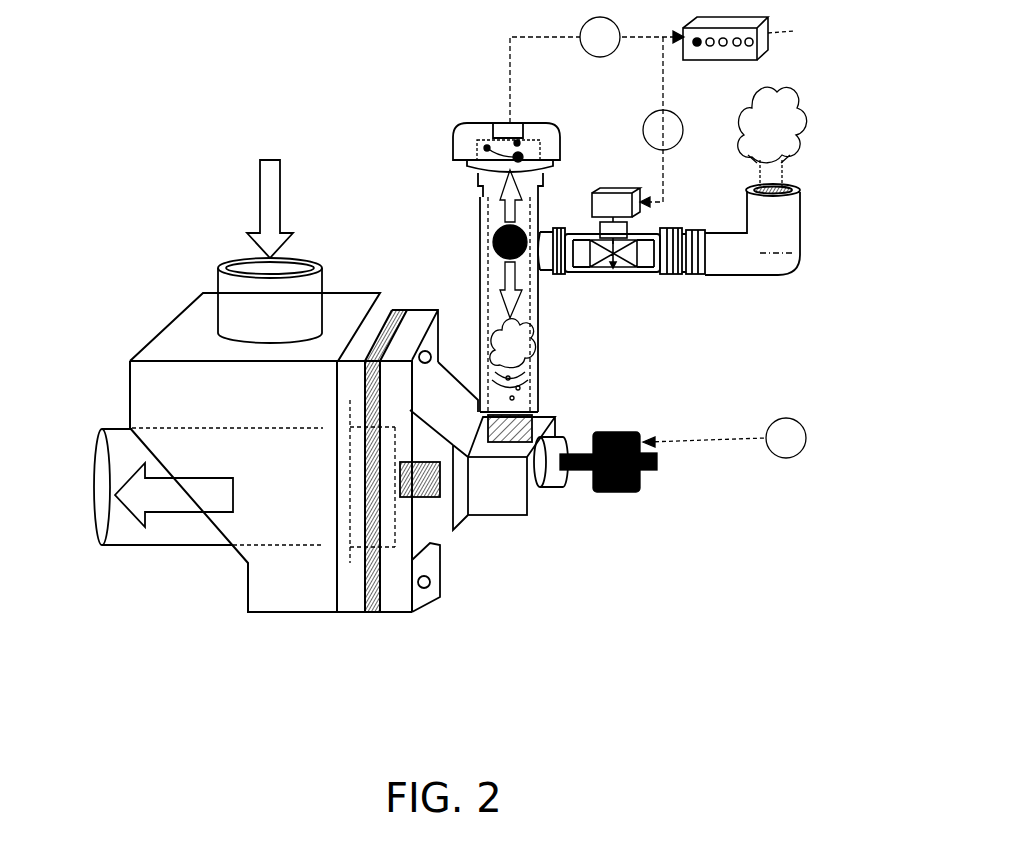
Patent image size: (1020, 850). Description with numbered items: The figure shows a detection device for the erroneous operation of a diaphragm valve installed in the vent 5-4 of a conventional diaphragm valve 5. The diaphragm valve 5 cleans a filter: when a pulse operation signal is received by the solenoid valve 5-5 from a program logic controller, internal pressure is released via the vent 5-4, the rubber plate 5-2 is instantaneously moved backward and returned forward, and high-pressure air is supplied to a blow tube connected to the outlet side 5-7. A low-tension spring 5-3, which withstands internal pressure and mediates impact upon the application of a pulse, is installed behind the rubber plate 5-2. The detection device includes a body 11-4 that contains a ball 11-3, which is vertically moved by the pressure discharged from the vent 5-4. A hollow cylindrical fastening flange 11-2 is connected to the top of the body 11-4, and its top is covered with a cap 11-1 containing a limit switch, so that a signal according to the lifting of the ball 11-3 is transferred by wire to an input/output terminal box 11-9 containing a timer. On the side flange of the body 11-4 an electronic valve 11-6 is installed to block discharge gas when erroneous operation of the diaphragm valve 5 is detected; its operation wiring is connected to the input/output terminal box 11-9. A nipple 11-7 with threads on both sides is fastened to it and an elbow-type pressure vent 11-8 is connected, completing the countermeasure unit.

The diaphragm valve 5 is at (291, 613).
The rubber plate 5-2 is at (408, 302).
The low-tension spring 5-3 is at (420, 500).
The vent 5-4 is at (540, 418).
The solenoid valve 5-5 is at (640, 480).
The outlet side 5-7 is at (97, 467).
The cap 11-1 is at (485, 123).
The hollow cylindrical fastening flange 11-2 is at (475, 158).
The ball 11-3 is at (483, 228).
The body 11-4 is at (490, 260).
The electronic valve 11-6 is at (614, 192).
The nipple 11-7 is at (680, 263).
The elbow-type pressure vent 11-8 is at (800, 258).
The input/output terminal box 11-9 is at (790, 58).